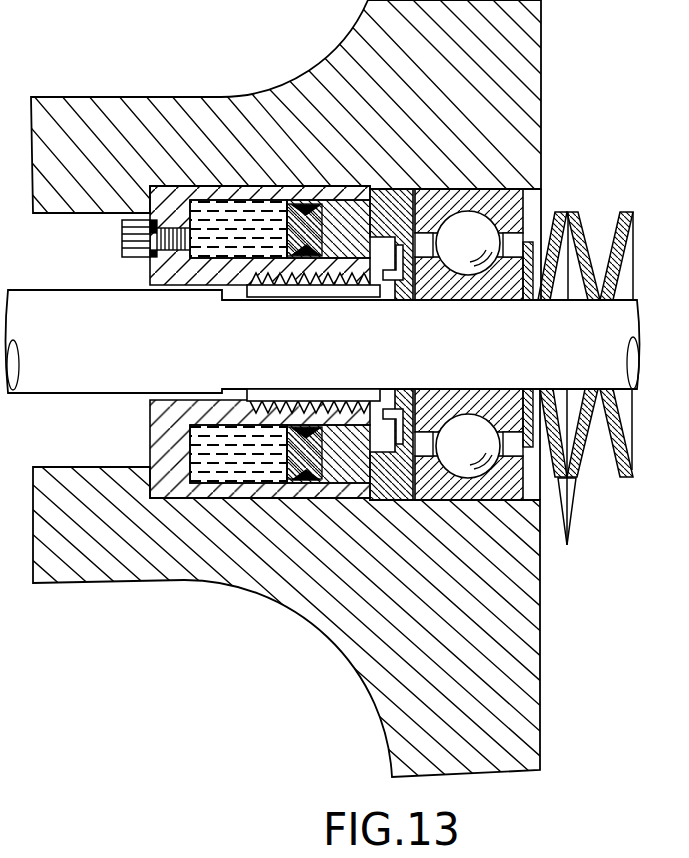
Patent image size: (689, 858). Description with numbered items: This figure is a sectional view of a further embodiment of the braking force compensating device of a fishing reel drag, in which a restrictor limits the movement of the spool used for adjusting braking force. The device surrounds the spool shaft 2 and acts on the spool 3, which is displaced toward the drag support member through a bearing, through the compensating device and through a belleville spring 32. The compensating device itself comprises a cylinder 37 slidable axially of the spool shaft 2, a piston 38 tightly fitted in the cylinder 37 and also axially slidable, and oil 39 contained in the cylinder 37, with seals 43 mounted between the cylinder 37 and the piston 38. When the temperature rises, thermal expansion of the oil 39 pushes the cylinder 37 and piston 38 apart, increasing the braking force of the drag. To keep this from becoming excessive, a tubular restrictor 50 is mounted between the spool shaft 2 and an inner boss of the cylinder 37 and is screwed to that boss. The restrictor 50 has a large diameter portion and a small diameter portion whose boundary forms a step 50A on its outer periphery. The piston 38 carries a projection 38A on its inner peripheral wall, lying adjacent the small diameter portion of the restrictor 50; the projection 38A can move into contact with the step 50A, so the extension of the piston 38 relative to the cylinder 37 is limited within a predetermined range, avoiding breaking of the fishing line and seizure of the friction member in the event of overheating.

The spool shaft 2 is at (110, 390).
The spool 3 is at (78, 588).
The belleville spring 32 is at (612, 463).
The cylinder 37 is at (162, 187).
The piston 38 is at (340, 213).
The projection 38A is at (397, 406).
The oil 39 is at (210, 200).
The seals 43 is at (260, 197).
The tubular restrictor 50 is at (265, 298).
The step 50A is at (392, 230).